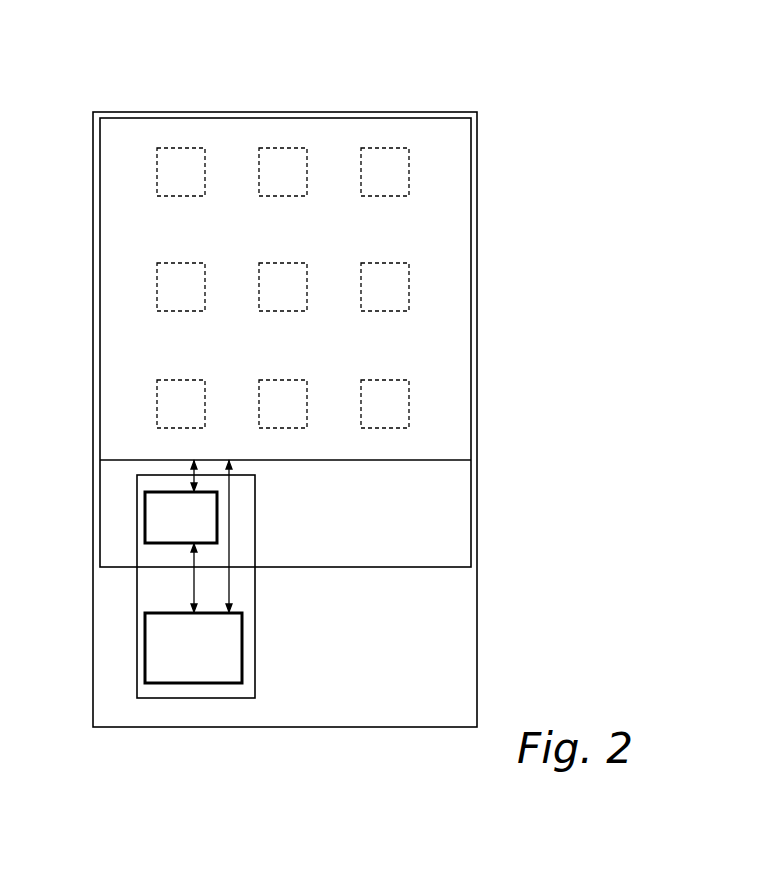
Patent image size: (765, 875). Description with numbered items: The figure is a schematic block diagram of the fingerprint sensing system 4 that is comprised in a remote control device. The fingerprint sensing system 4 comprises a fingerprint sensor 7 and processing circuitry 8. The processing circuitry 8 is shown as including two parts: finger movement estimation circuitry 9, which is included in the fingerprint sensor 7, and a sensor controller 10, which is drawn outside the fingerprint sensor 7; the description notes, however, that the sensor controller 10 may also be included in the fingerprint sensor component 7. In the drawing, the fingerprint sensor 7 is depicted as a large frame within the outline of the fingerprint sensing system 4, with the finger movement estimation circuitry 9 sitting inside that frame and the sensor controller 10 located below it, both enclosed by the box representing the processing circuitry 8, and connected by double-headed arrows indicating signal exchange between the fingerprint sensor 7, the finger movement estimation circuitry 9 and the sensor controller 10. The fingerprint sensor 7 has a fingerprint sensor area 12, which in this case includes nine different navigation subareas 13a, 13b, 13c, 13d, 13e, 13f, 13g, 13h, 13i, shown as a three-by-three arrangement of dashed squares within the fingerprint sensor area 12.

The fingerprint sensing system 4 is at (552, 82).
The fingerprint sensor 7 is at (472, 306).
The processing circuitry 8 is at (137, 612).
The finger movement estimation circuitry 9 is at (145, 511).
The sensor controller 10 is at (242, 647).
The fingerprint sensor area 12 is at (237, 260).
The navigation subarea 13a is at (180, 148).
The navigation subarea 13b is at (283, 148).
The navigation subarea 13c is at (385, 148).
The navigation subarea 13d is at (180, 263).
The navigation subarea 13e is at (283, 263).
The navigation subarea 13f is at (384, 263).
The navigation subarea 13g is at (180, 380).
The navigation subarea 13h is at (283, 380).
The navigation subarea 13i is at (384, 380).